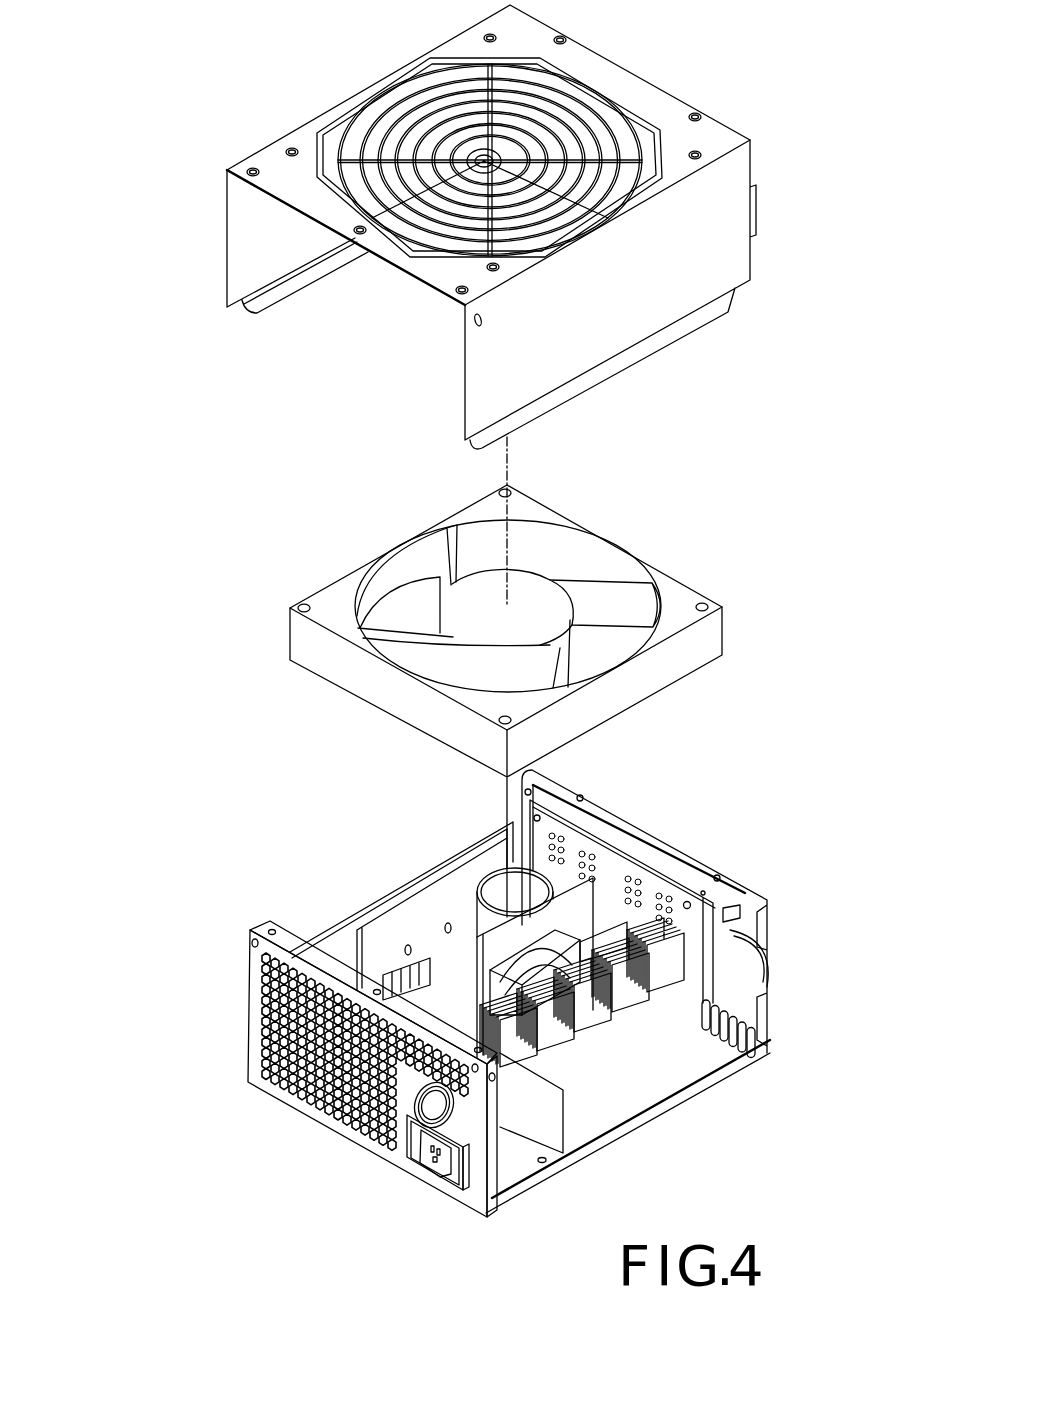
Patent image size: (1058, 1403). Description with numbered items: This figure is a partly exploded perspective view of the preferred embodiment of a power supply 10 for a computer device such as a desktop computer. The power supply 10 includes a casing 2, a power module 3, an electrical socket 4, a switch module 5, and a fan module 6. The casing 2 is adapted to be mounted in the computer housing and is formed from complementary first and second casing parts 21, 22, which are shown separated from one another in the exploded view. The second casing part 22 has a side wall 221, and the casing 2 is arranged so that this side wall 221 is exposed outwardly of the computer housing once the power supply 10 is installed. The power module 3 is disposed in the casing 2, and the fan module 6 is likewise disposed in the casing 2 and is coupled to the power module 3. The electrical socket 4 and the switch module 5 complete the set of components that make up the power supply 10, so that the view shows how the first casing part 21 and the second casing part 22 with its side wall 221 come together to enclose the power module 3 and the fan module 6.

The power supply 10 is at (746, 62).
The casing 2 is at (160, 113).
The first casing part 21 is at (270, 141).
The second casing part 22 is at (248, 1003).
The side wall 221 is at (257, 1053).
The fan module 6 is at (338, 572).
The power module 3 is at (642, 1030).
The electrical socket 4 is at (439, 1170).
The switch module 5 is at (470, 1135).